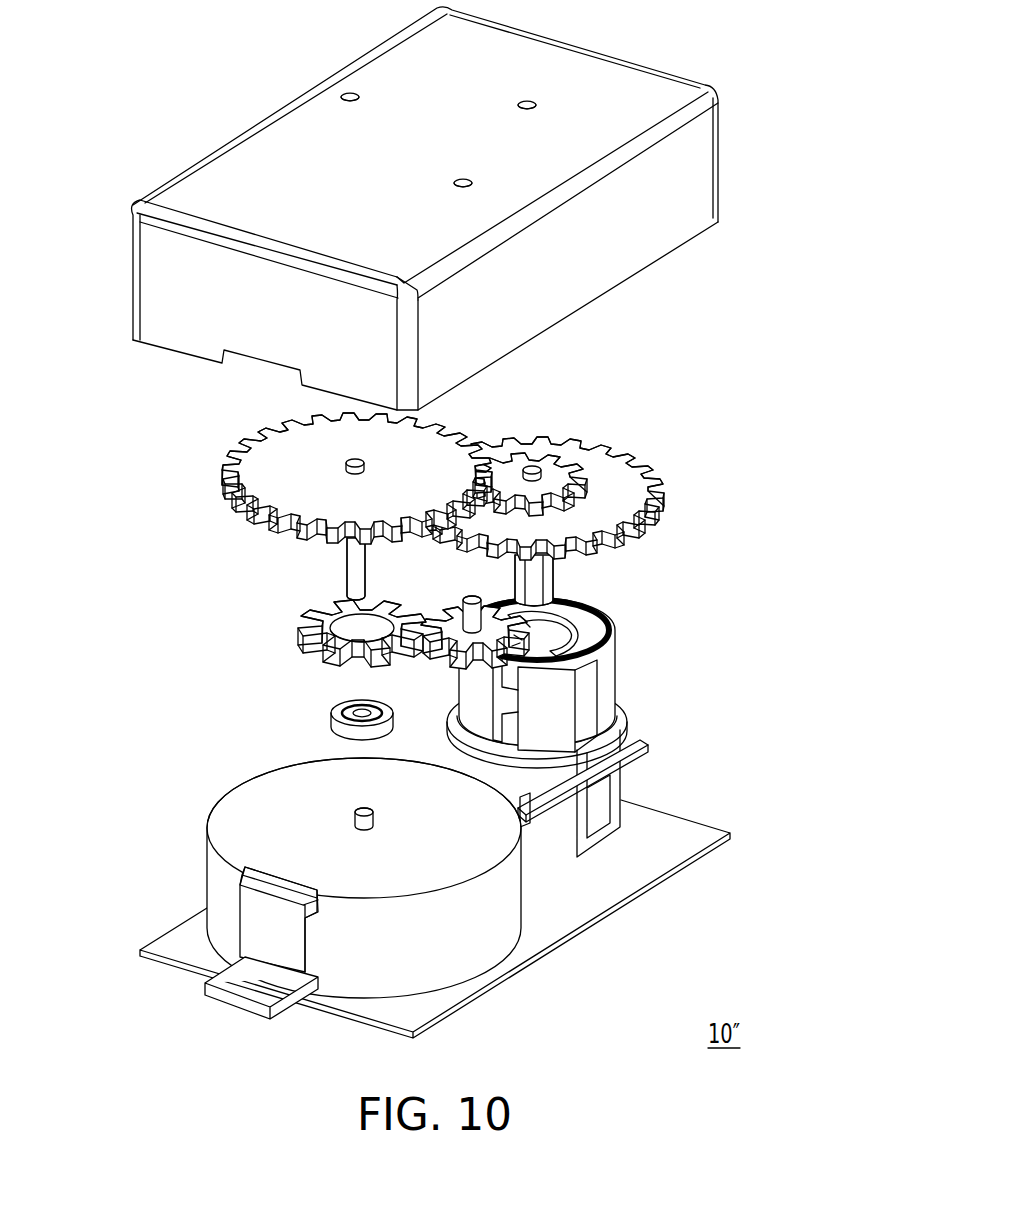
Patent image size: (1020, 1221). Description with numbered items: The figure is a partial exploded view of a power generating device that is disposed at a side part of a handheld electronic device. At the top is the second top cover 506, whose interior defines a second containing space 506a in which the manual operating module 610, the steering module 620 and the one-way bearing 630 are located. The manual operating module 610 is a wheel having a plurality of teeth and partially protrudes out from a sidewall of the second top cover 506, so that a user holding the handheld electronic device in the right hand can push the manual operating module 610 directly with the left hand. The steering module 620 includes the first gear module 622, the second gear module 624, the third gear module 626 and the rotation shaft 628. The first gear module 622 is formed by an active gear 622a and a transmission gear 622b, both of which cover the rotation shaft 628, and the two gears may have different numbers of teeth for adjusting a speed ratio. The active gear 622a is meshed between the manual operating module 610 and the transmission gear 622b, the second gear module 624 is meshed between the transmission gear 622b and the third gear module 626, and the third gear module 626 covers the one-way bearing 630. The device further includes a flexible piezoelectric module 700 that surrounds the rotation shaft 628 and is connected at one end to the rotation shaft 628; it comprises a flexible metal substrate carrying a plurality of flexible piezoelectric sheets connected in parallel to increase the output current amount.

The second top cover 506 is at (290, 795).
The second containing space 506a is at (170, 378).
The manual operating module 610 is at (258, 472).
The steering module 620 is at (725, 406).
The first gear module 622 is at (690, 373).
The active gear 622a is at (558, 472).
The transmission gear 622b is at (622, 490).
The second gear module 624 is at (503, 628).
The third gear module 626 is at (303, 622).
The rotation shaft 628 is at (538, 582).
The one-way bearing 630 is at (320, 722).
The flexible piezoelectric module 700 is at (605, 688).